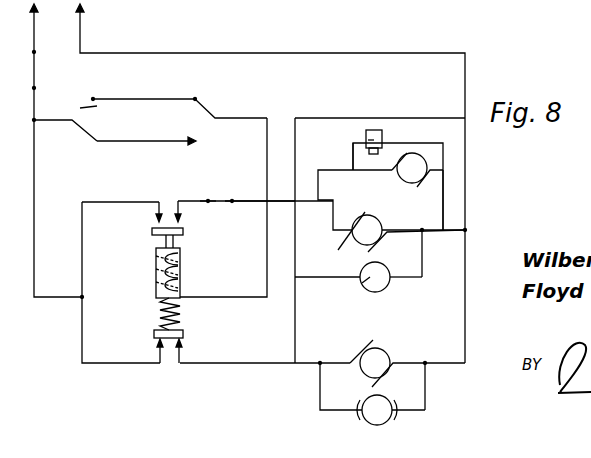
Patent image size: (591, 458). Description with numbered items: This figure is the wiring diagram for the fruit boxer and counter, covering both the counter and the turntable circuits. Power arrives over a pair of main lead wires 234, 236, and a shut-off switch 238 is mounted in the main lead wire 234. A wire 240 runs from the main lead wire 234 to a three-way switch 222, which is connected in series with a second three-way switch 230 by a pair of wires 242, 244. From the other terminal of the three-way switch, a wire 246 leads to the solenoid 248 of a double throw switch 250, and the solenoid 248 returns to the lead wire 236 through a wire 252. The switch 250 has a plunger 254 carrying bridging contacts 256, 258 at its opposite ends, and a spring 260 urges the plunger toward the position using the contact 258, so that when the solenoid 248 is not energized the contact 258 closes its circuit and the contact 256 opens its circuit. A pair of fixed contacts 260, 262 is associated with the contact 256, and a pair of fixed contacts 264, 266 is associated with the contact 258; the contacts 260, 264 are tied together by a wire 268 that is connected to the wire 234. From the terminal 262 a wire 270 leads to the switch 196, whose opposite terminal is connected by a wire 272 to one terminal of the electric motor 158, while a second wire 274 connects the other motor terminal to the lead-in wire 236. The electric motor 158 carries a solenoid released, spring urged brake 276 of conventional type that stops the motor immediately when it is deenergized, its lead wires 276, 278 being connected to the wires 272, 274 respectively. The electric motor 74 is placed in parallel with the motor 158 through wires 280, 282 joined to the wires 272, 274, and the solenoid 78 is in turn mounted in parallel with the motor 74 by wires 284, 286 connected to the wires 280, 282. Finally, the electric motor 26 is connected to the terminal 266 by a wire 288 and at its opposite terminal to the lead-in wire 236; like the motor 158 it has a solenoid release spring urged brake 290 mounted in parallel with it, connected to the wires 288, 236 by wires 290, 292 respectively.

The electric motor 26 is at (388, 360).
The electric motor 74 is at (410, 179).
The solenoid 78 is at (373, 128).
The electric motor 158 is at (394, 238).
The switch 196 is at (255, 215).
The three-way switch 222 is at (71, 104).
The three-way switch 230 is at (208, 113).
The main lead wire 234 is at (36, 43).
The main lead wire 236 is at (83, 38).
The shut-off switch 238 is at (36, 86).
The wire 240 is at (64, 122).
The wire 242 is at (128, 98).
The wire 244 is at (130, 140).
The wire 246 is at (266, 132).
The solenoid 248 is at (181, 272).
The double throw switch 250 is at (148, 280).
The wire 252 is at (268, 292).
The plunger 254 is at (165, 242).
The bridging contact 256 is at (160, 228).
The bridging contact 258 is at (184, 332).
The spring 260 is at (158, 199).
The contact 262 is at (179, 198).
The contact 264 is at (158, 352).
The contact 266 is at (181, 351).
The wire 268 is at (80, 340).
The wire 270 is at (206, 200).
The wire 272 is at (277, 203).
The wire 274 is at (426, 233).
The brake 276 is at (360, 283).
The lead wire 278 is at (415, 280).
The wire 280 is at (352, 162).
The wire 282 is at (448, 200).
The wire 284 is at (351, 148).
The wire 286 is at (409, 140).
The wire 288 is at (290, 364).
The brake 290 is at (320, 377).
The wire 292 is at (438, 385).